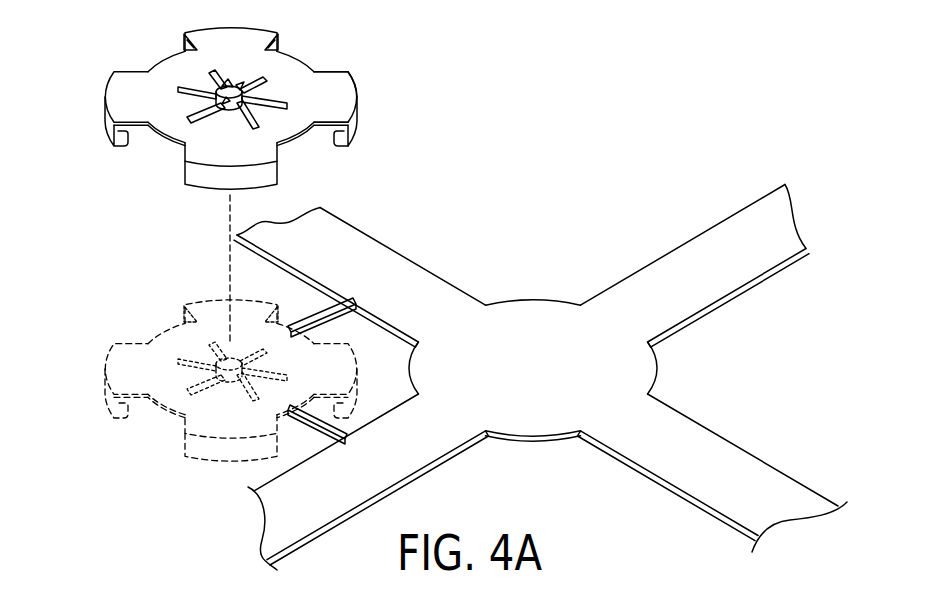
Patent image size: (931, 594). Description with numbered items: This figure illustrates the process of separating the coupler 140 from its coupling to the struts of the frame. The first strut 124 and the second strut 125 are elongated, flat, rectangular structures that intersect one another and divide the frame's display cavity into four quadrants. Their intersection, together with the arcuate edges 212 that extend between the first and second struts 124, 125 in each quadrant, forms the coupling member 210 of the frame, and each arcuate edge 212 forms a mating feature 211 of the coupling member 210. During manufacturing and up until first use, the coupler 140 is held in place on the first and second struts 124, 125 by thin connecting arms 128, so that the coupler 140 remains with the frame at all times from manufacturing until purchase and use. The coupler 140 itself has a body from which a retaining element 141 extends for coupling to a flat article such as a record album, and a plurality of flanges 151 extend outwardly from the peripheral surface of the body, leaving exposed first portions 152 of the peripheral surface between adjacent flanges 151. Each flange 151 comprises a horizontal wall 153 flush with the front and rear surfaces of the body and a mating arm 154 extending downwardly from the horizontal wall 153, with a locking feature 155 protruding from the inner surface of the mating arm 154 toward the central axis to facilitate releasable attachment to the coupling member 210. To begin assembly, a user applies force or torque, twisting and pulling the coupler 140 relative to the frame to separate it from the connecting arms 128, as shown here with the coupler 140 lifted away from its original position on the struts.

The first strut 124 is at (377, 272).
The second strut 125 is at (722, 250).
The connecting arms 128 is at (332, 303).
The coupler 140 is at (306, 78).
The retaining element 141 is at (219, 70).
The flanges 151 is at (348, 75).
The first portions of the peripheral surface 152 is at (175, 66).
The horizontal wall 153 is at (343, 108).
The mating arm 154 is at (349, 128).
The locking feature 155 is at (333, 147).
The coupling member 210 is at (466, 324).
The mating feature 211 is at (640, 378).
The arcuate edge 212 is at (396, 349).